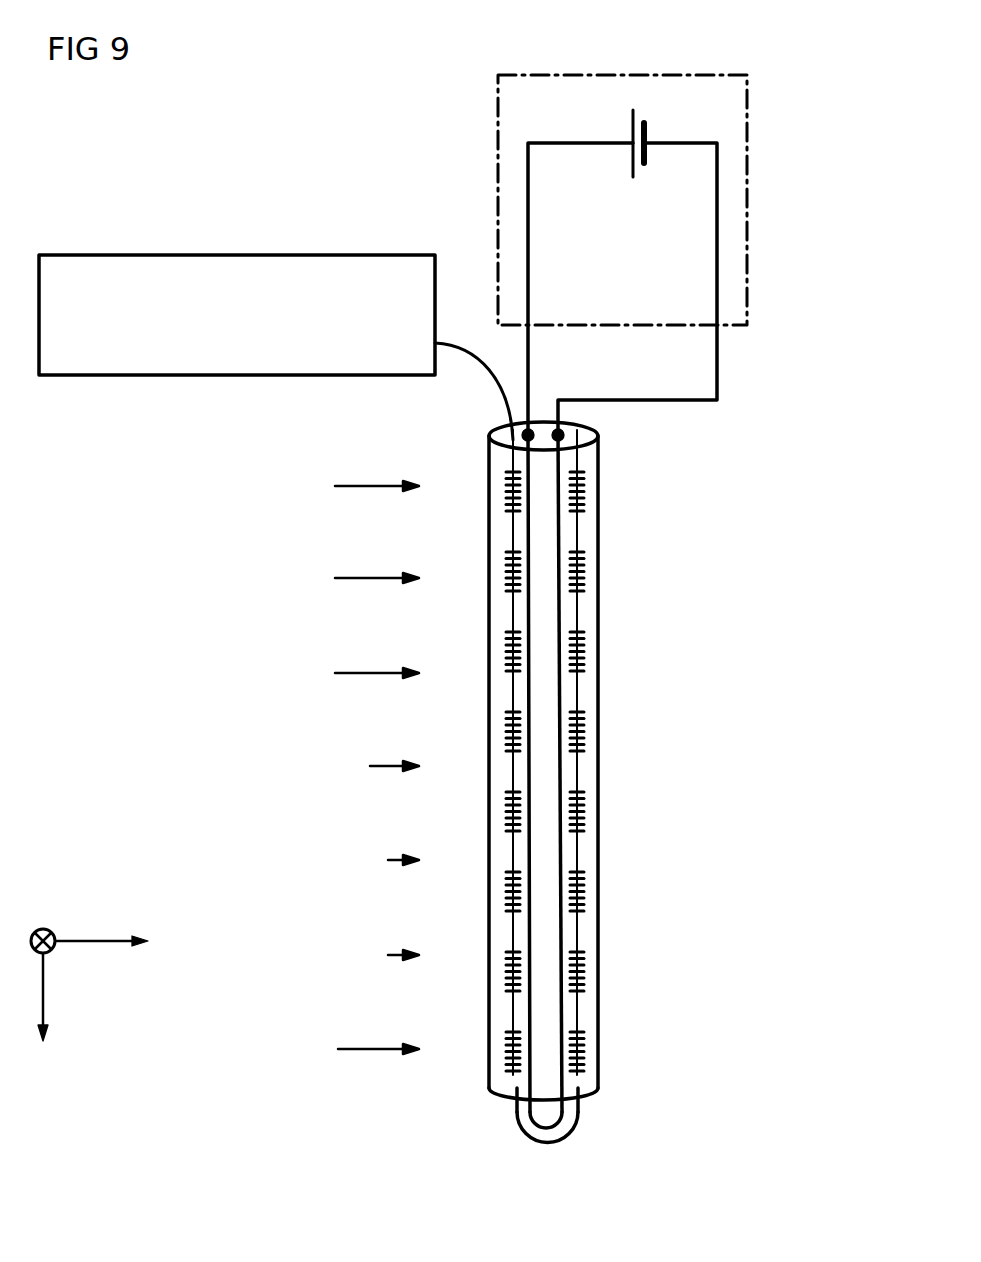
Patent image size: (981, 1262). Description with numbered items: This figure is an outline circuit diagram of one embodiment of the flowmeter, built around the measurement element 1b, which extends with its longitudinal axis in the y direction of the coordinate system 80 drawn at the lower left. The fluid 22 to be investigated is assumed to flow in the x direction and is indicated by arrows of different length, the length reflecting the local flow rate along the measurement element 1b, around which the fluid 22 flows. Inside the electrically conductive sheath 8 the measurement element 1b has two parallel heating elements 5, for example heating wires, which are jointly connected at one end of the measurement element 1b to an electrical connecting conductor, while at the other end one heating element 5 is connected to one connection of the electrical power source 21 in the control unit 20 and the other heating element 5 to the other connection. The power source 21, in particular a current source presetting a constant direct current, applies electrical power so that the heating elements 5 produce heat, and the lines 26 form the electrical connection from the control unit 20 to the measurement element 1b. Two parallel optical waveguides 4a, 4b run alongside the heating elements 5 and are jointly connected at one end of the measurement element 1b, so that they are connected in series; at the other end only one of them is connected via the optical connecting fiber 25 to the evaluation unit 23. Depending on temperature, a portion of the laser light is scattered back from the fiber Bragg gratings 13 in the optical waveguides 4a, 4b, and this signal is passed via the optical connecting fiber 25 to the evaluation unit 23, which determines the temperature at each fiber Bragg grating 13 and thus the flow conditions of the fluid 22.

The measurement element 1b is at (597, 782).
The optical waveguide 4a is at (514, 690).
The optical waveguide 4b is at (578, 772).
The heating element 5 is at (563, 690).
The electrically conductive sheath 8 is at (598, 606).
The fiber Bragg grating 13 is at (580, 895).
The control unit 20 is at (747, 177).
The electrical power source 21 is at (641, 98).
The fluid 22 is at (390, 862).
The evaluation unit 23 is at (240, 375).
The optical connecting fiber 25 is at (485, 370).
The supply lines 26 is at (714, 362).
The coordinate system 80 is at (78, 985).